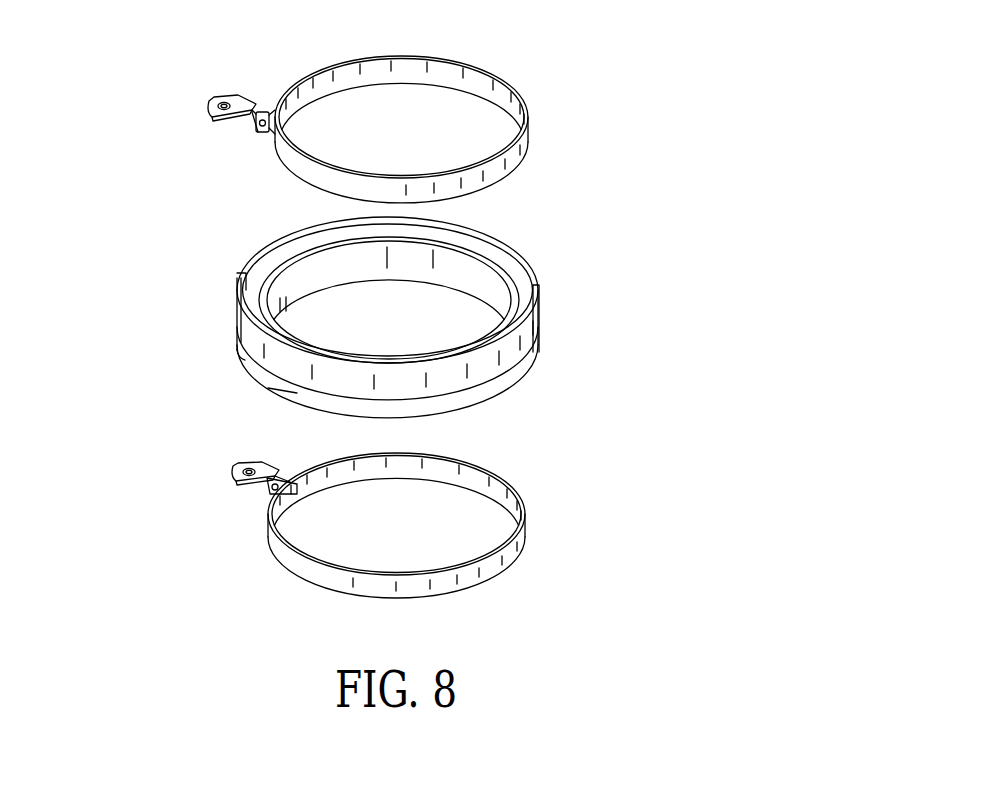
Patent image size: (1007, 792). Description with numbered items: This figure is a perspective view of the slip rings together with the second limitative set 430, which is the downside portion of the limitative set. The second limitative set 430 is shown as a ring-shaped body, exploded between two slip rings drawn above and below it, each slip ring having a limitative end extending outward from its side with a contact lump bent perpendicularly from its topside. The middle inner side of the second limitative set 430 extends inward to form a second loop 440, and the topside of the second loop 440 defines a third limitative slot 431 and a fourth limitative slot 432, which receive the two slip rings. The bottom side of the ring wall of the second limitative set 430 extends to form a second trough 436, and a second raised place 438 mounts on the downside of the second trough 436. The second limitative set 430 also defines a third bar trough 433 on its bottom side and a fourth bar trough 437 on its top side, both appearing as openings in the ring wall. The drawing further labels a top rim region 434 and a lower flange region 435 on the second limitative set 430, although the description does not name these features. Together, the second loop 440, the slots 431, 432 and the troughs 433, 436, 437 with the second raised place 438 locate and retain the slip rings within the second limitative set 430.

The second limitative set 430 is at (468, 301).
The third limitative slot 431 is at (450, 250).
The fourth limitative slot 432 is at (460, 285).
The third bar trough 433 is at (238, 277).
The top rim 434 is at (275, 258).
The bottom flange 435 is at (258, 385).
The second trough 436 is at (540, 303).
The fourth bar trough 437 is at (268, 333).
The second raised place 438 is at (537, 352).
The second loop 440 is at (497, 287).